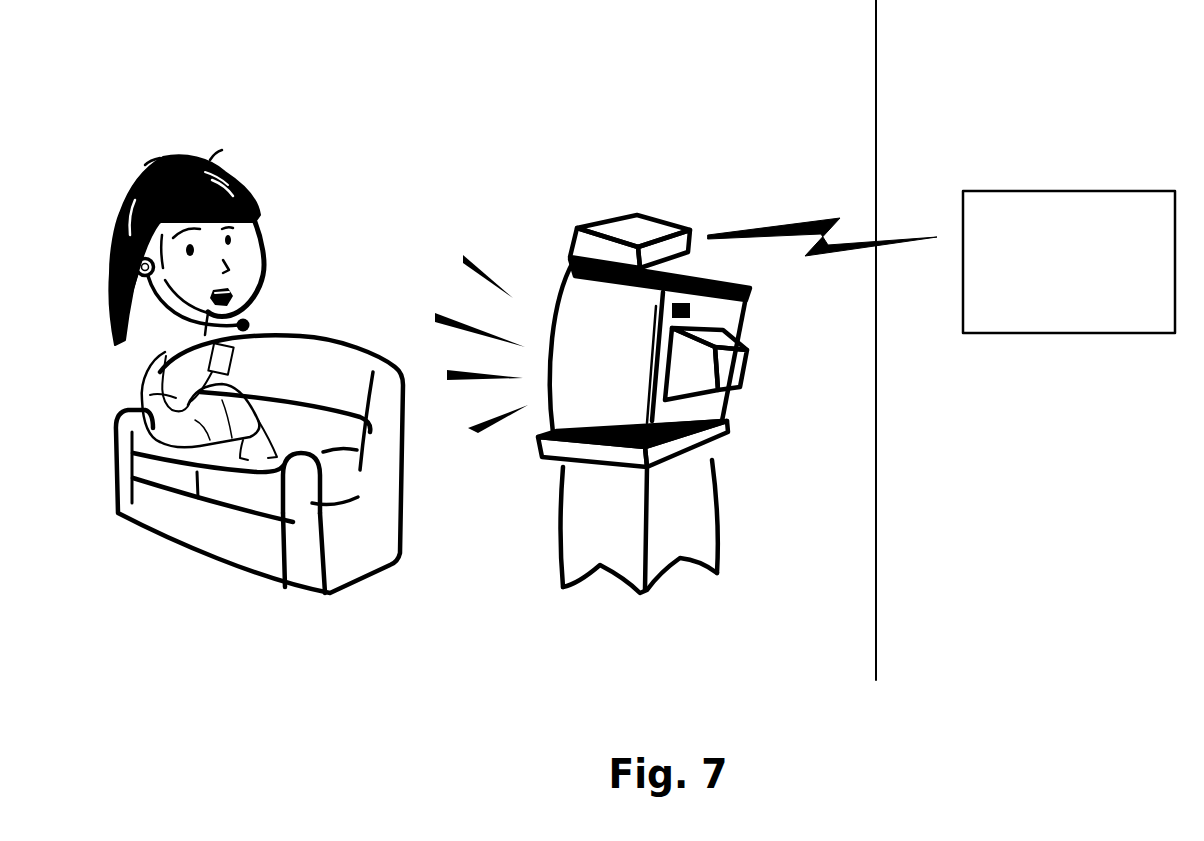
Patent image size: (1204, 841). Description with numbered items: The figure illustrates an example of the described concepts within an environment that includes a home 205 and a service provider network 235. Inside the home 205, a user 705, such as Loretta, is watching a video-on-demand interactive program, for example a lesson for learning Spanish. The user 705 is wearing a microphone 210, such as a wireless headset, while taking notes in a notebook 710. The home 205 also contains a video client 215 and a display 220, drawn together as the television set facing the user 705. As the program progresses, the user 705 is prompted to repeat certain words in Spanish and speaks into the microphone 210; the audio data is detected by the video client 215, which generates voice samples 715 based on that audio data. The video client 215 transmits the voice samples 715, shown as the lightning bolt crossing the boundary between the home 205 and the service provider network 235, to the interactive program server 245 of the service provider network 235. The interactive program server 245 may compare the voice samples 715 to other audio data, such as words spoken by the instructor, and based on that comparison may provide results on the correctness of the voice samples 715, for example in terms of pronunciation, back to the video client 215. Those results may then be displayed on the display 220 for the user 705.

The home 205 is at (656, 340).
The microphone 210 is at (124, 334).
The video client 215 is at (640, 212).
The display 220 is at (741, 297).
The service provider network 235 is at (1069, 172).
The interactive program server 245 is at (1069, 262).
The user 705 is at (180, 153).
The notebook 710 is at (260, 327).
The voice samples 715 is at (822, 211).